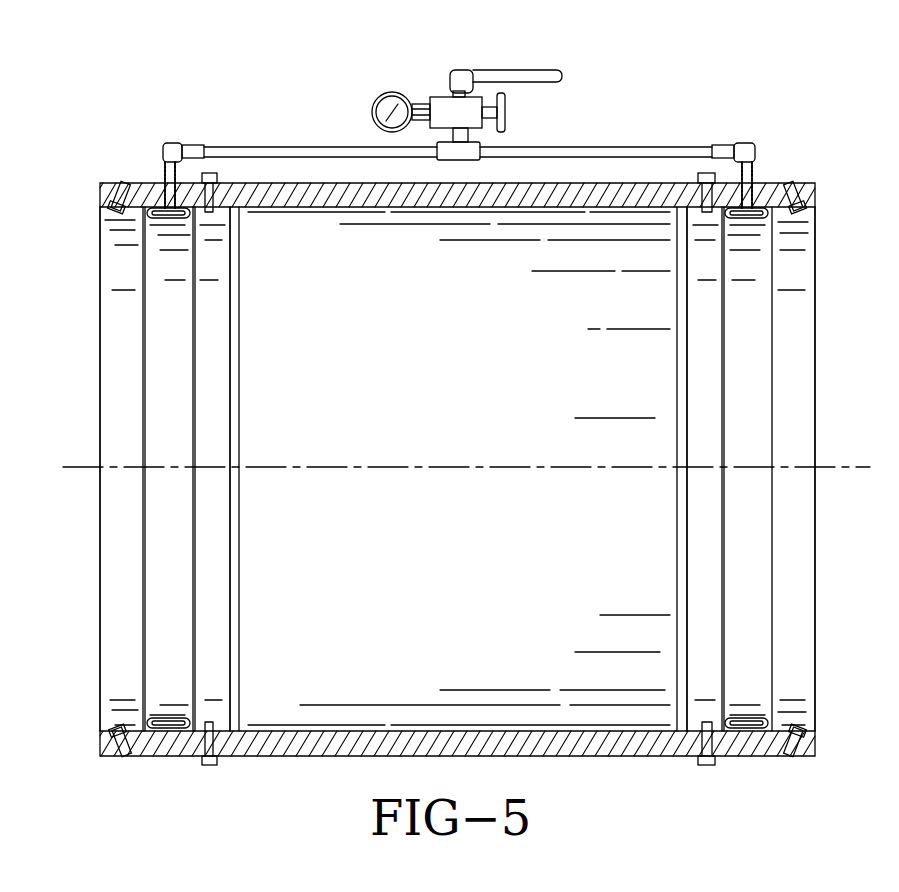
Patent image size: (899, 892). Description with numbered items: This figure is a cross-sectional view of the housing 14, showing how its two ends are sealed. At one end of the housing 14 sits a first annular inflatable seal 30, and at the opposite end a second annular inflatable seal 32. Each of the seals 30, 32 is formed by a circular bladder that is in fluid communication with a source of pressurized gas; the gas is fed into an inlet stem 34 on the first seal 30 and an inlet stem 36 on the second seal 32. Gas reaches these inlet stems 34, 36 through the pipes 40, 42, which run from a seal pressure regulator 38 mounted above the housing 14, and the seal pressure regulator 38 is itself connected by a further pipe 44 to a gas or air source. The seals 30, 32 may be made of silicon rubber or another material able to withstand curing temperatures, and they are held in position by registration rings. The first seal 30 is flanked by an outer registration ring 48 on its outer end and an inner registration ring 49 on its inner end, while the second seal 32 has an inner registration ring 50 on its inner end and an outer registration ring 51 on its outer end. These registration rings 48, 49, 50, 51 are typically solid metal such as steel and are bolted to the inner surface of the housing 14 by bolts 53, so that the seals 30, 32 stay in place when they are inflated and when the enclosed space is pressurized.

The housing 14 is at (86, 122).
The first annular inflatable seal 30 is at (175, 215).
The second annular inflatable seal 32 is at (742, 215).
The inlet stem 34 is at (163, 175).
The inlet stem 36 is at (755, 176).
The seal pressure regulator 38 is at (442, 102).
The pipe 40 is at (345, 146).
The pipe 42 is at (566, 148).
The pipe 44 is at (538, 73).
The outer registration ring 48 is at (108, 232).
The inner registration ring 49 is at (215, 260).
The inner registration ring 50 is at (700, 262).
The outer registration ring 51 is at (805, 235).
The bolts 53 is at (120, 183).